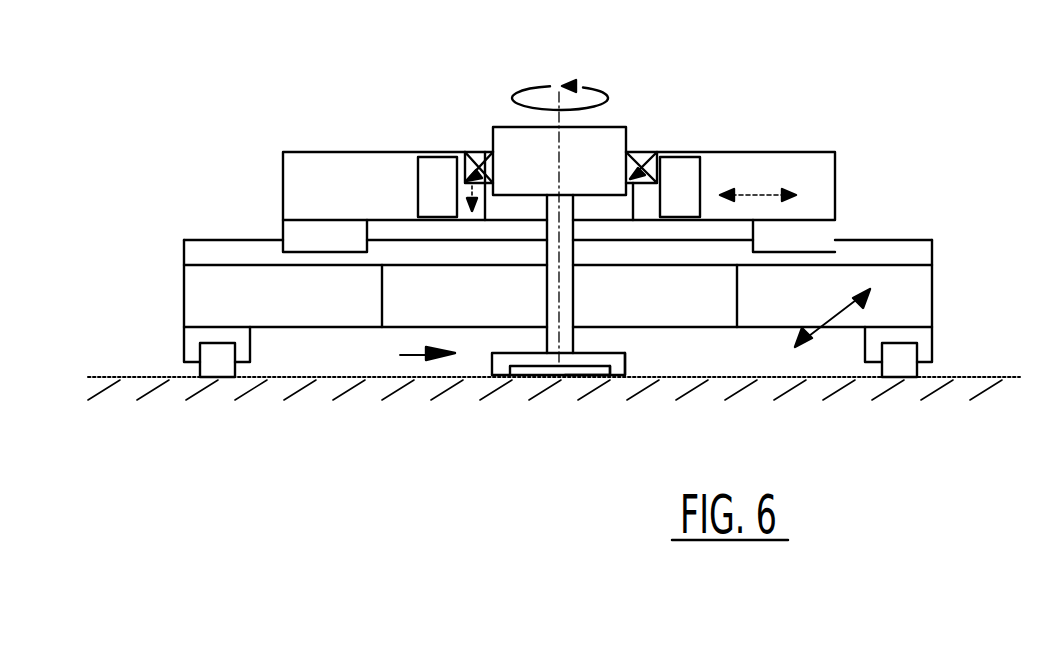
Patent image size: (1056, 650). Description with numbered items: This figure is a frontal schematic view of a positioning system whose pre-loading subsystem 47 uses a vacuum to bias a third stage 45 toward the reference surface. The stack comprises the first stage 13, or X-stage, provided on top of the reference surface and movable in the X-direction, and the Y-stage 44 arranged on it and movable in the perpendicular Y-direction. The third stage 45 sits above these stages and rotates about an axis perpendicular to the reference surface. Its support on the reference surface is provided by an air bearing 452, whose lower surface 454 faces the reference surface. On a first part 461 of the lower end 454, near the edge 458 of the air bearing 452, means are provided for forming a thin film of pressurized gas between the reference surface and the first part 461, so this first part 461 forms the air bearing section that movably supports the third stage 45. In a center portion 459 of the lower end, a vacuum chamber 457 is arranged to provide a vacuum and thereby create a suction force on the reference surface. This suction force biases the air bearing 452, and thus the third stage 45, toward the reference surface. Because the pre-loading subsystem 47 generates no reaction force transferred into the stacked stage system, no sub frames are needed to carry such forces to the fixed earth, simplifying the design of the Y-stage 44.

The first stage 13 is at (928, 287).
The Y-stage 44 is at (827, 172).
The third stage 45 is at (597, 133).
The pre-loading subsystem 47 is at (400, 355).
The air bearing 452 is at (558, 350).
The lower surface 454 is at (617, 378).
The vacuum chamber 457 is at (553, 378).
The edge 458 is at (623, 372).
The center portion 459 is at (583, 378).
The first part 461 is at (502, 378).